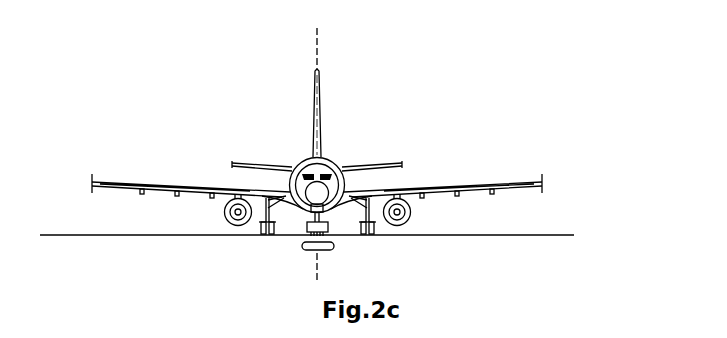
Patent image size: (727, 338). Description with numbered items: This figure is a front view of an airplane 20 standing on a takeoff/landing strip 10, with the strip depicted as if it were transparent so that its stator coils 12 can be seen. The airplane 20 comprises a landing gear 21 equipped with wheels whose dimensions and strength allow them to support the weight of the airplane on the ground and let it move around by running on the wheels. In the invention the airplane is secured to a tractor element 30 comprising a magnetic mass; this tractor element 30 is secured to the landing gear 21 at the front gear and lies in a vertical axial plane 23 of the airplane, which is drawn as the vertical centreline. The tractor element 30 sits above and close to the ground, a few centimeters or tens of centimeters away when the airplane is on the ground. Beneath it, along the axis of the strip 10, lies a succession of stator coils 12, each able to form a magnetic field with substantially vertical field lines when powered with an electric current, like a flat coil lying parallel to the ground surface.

The strip 10 is at (464, 232).
The stator coil 12 is at (305, 252).
The airplane 20 is at (317, 191).
The landing gear 21 is at (262, 226).
The vertical axial plane 23 is at (320, 40).
The tractor element 30 is at (329, 229).